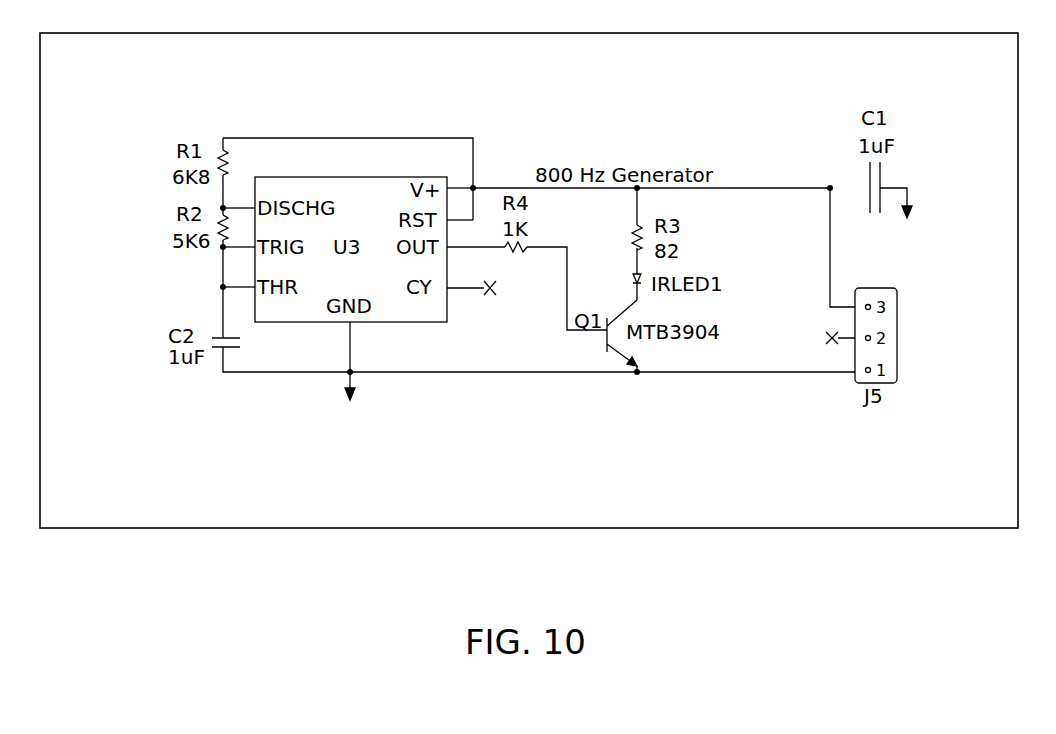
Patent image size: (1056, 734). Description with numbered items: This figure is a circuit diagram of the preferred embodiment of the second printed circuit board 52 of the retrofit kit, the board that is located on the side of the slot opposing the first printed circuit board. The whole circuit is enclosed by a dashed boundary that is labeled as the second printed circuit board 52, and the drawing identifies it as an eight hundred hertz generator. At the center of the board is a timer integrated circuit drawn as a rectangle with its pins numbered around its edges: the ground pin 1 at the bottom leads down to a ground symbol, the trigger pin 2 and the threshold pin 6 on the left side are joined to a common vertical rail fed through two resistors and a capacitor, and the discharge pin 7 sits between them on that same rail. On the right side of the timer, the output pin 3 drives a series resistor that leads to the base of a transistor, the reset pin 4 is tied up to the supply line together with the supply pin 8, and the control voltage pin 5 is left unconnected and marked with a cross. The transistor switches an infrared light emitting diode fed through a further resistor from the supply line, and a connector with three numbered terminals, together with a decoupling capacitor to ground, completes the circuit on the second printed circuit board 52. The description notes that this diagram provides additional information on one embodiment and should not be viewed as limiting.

The second printed circuit board 52 is at (796, 510).
The GND pin of U3 1 is at (355, 361).
The TRIG pin of U3 2 is at (239, 237).
The OUT pin of U3 3 is at (476, 238).
The RST pin of U3 4 is at (460, 211).
The CY pin of U3 5 is at (471, 282).
The THR pin of U3 6 is at (239, 277).
The DISCHG pin of U3 7 is at (239, 198).
The V+ pin of U3 8 is at (460, 180).